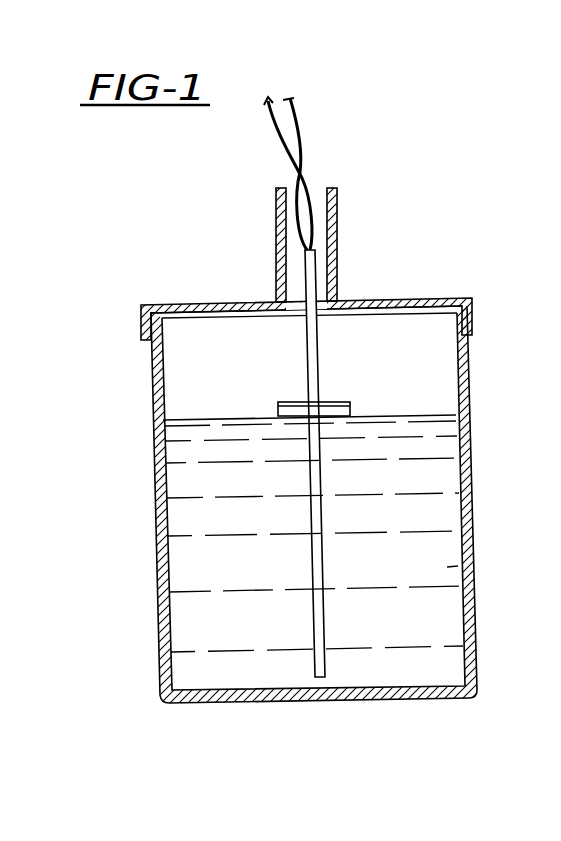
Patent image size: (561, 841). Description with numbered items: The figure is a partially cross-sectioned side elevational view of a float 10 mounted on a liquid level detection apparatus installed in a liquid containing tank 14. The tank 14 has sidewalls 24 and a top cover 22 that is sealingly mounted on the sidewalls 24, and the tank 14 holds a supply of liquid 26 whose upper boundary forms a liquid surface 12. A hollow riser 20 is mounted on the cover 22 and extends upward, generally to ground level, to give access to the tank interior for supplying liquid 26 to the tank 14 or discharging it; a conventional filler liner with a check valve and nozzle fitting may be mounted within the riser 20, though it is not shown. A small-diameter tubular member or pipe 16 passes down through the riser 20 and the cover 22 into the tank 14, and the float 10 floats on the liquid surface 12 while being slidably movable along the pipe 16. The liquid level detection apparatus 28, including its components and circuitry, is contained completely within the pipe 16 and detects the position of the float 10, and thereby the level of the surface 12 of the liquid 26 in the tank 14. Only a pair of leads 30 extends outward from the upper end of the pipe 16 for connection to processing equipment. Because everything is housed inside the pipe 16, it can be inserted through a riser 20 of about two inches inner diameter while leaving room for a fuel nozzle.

The float 10 is at (351, 384).
The liquid surface 12 is at (441, 414).
The liquid containing tank 14 is at (503, 486).
The tubular member or pipe 16 is at (313, 523).
The riser 20 is at (276, 221).
The top cover 22 is at (218, 304).
The sidewalls 24 is at (155, 473).
The liquid 26 is at (447, 567).
The liquid level detection apparatus 28 is at (282, 360).
The pair of leads 30 is at (283, 143).